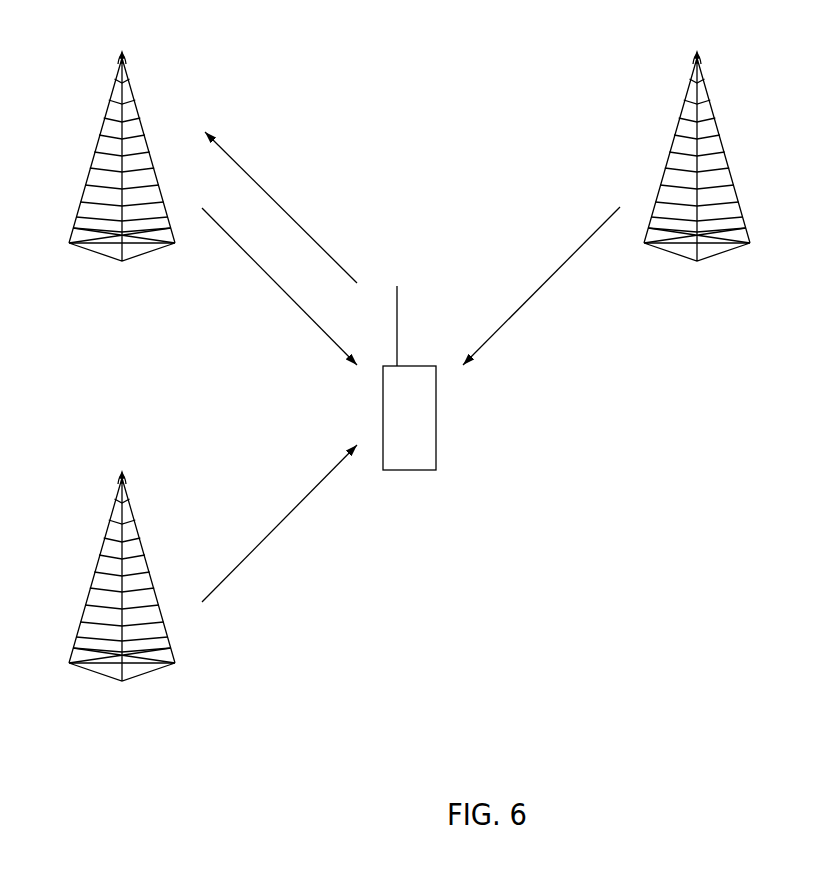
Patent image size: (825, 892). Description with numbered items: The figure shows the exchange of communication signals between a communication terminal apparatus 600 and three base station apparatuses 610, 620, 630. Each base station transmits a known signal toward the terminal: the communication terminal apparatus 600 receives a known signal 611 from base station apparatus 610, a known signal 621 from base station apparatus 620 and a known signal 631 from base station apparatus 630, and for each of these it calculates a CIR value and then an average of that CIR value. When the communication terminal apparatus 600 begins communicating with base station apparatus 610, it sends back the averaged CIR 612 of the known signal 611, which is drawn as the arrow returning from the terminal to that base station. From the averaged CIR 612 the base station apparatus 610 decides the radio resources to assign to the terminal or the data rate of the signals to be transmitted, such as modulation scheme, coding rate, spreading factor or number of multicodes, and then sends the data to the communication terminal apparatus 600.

The communication terminal apparatus 600 is at (410, 366).
The base station apparatus 610 is at (137, 113).
The known signal PL611 611 is at (279, 286).
The CIR612 612 is at (281, 207).
The base station apparatus 620 is at (725, 154).
The known signal PL621 621 is at (541, 286).
The base station apparatus 630 is at (137, 522).
The known signal PL631 631 is at (279, 523).